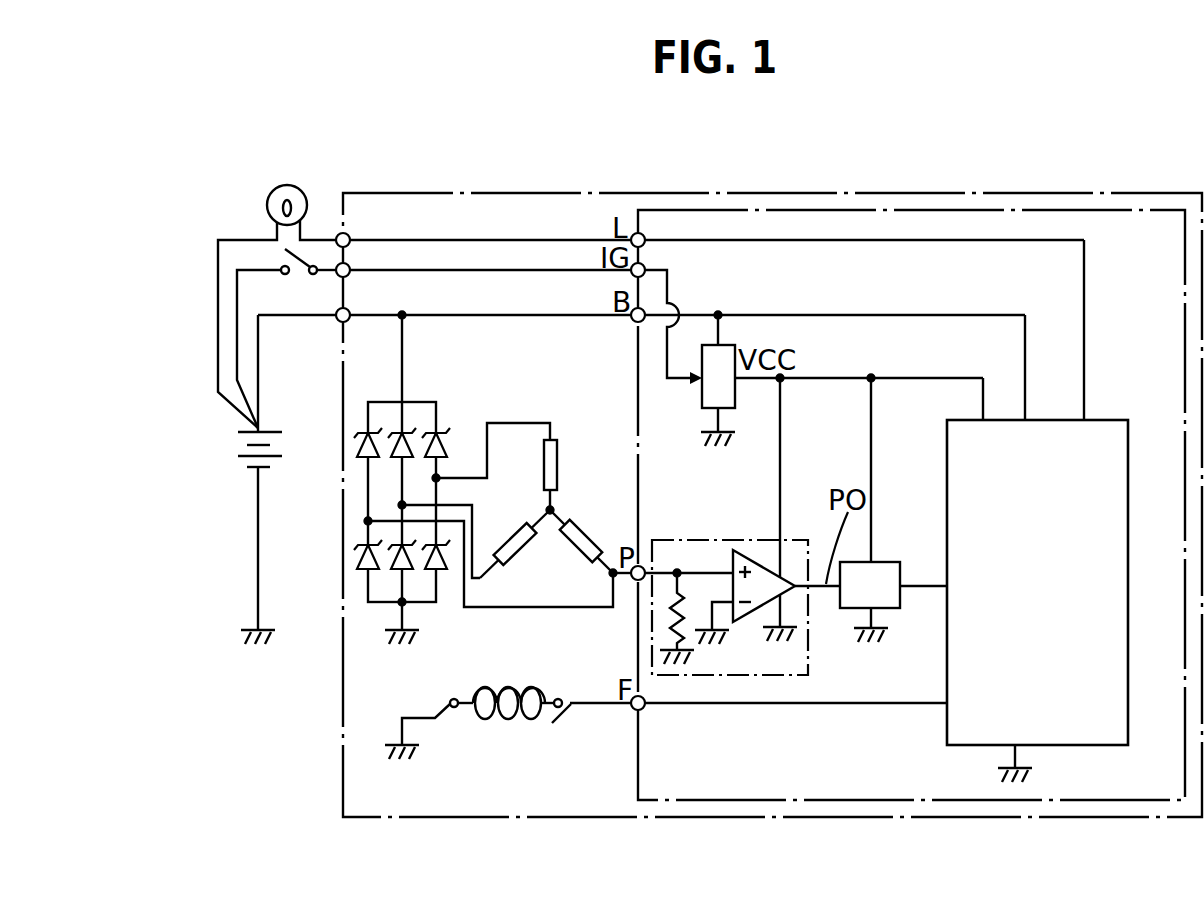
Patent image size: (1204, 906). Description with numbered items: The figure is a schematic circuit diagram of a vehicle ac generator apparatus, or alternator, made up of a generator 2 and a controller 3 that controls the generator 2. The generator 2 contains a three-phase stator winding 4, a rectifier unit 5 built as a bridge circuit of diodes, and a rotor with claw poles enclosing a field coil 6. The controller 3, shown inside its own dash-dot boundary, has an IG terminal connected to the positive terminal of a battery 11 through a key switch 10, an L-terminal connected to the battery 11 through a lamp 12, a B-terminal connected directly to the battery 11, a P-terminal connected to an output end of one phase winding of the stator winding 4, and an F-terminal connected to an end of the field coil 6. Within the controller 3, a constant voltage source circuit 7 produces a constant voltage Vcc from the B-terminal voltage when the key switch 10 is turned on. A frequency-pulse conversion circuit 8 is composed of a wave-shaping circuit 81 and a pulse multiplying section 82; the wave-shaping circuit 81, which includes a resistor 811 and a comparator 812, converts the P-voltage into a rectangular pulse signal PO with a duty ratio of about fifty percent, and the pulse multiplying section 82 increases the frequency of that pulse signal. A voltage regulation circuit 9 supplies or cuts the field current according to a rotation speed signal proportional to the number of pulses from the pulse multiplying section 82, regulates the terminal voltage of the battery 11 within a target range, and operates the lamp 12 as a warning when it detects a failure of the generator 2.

The generator 2 is at (493, 352).
The controller 3 is at (990, 207).
The three-phase stator winding 4 is at (576, 474).
The rectifier unit 5 is at (446, 420).
The field coil 6 is at (519, 733).
The constant voltage source circuit 7 is at (728, 393).
The frequency-pulse conversion circuit 8 is at (780, 613).
The wave-shaping circuit 81 is at (746, 631).
The resistor 811 is at (697, 548).
The comparator 812 is at (758, 550).
The pulse multiplying section 82 is at (892, 610).
The voltage regulation circuit 9 is at (1100, 420).
The key switch 10 is at (305, 258).
The battery 11 is at (238, 450).
The lamp 12 is at (272, 190).